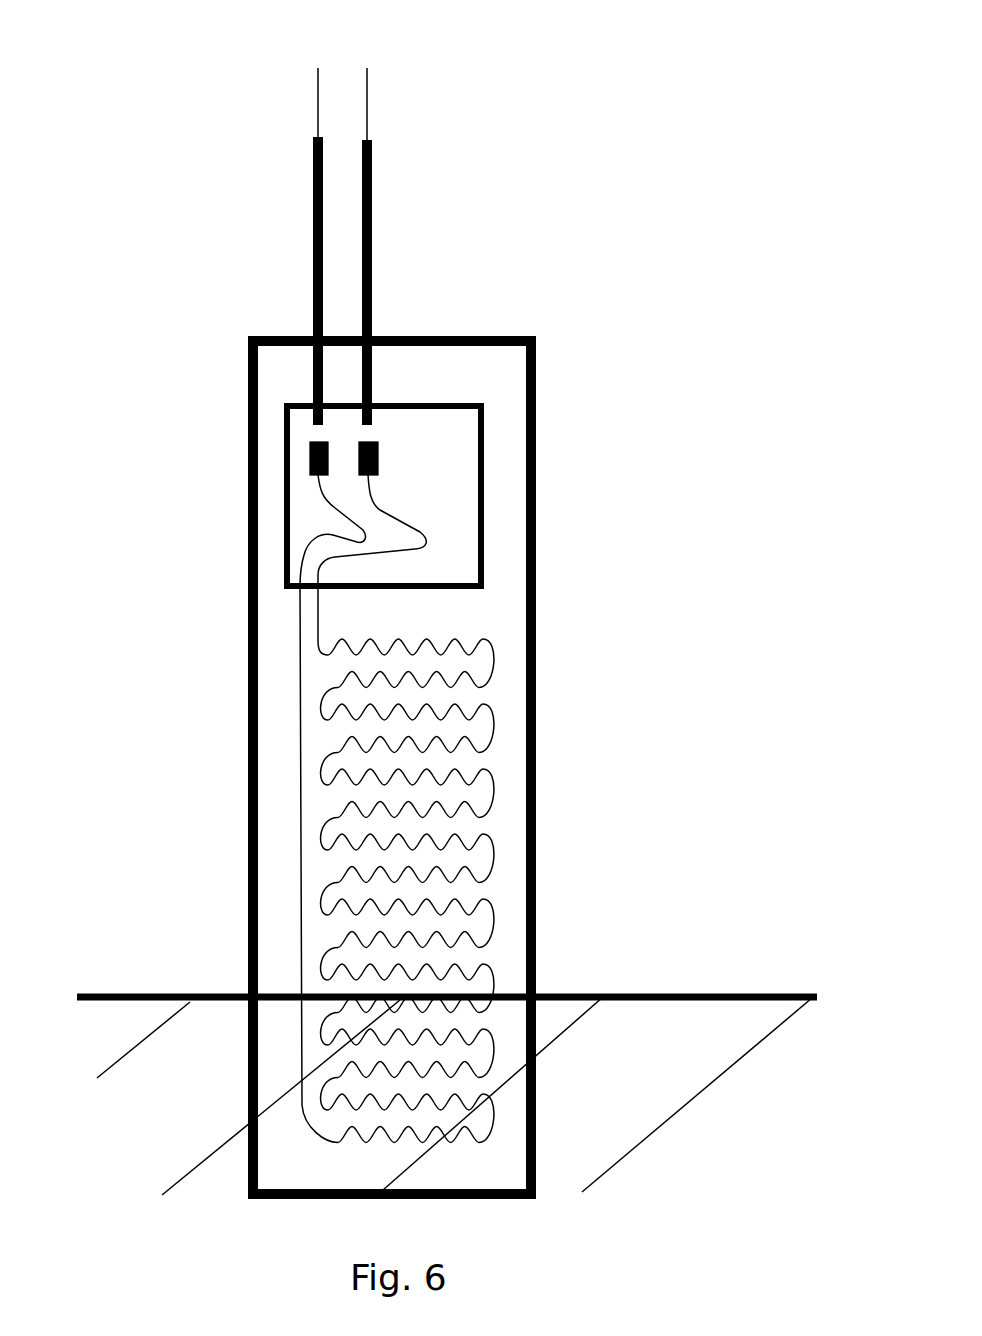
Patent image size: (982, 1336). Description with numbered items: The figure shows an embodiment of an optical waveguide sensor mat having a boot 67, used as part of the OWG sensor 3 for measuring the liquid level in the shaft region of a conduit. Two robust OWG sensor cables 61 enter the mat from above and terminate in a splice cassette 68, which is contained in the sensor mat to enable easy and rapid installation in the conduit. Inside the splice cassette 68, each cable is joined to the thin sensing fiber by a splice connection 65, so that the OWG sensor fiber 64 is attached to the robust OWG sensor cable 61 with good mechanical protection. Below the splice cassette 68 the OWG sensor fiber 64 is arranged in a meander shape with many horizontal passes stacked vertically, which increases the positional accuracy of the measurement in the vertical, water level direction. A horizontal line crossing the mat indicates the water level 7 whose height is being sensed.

The OWG sensor 3 is at (318, 62).
The OWG sensor cable 61 is at (358, 240).
The boot 67 is at (440, 373).
The splice cassette 68 is at (440, 467).
The splice connection 65 is at (308, 447).
The OWG sensor fiber 64 is at (497, 667).
The water level 7 is at (652, 1045).